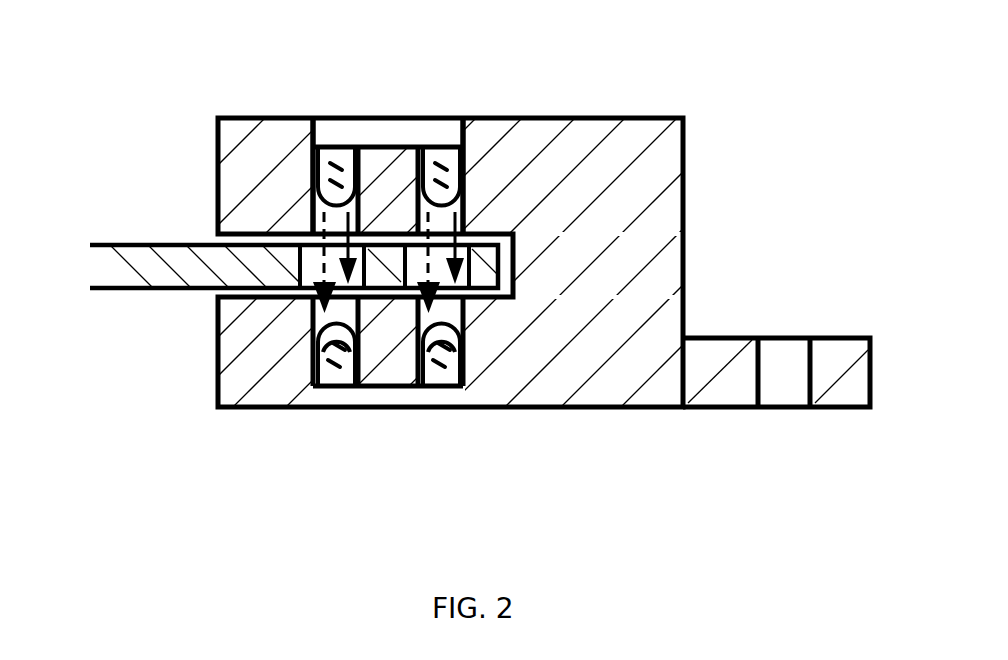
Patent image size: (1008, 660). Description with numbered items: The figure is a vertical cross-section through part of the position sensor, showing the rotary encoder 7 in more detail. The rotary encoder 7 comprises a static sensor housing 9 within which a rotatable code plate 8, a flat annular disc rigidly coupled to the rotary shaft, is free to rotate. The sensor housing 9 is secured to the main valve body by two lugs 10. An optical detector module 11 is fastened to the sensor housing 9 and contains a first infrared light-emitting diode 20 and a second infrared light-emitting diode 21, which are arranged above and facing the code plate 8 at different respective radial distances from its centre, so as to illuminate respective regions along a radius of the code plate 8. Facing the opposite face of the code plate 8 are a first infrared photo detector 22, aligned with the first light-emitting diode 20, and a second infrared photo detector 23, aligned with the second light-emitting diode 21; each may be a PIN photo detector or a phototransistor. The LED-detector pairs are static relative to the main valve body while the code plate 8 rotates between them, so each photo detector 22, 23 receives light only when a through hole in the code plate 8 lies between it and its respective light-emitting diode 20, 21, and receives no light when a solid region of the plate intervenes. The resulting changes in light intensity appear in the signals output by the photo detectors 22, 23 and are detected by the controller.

The rotary encoder 7 is at (120, 88).
The rotatable code plate 8 is at (138, 292).
The sensor housing 9 is at (685, 152).
The lugs 10 is at (768, 335).
The optical detector module 11 is at (467, 92).
The first infrared light-emitting diode 20 is at (330, 142).
The second infrared light-emitting diode 21 is at (435, 143).
The first infrared photo detector 22 is at (333, 388).
The second infrared photo detector 23 is at (443, 388).